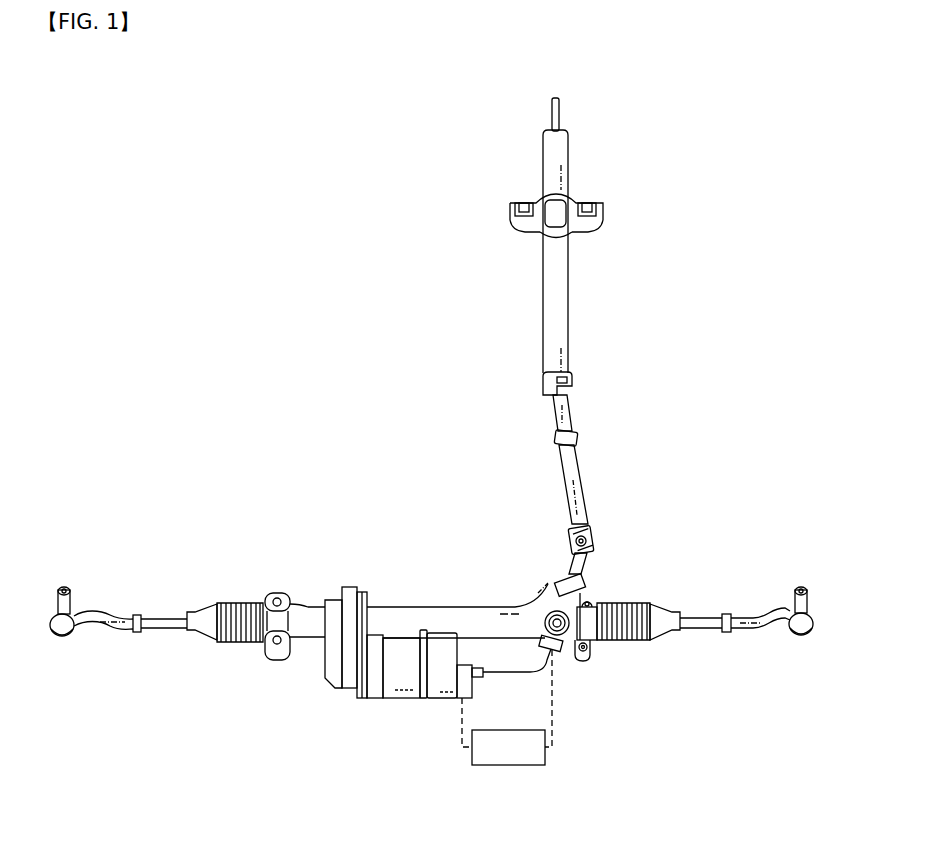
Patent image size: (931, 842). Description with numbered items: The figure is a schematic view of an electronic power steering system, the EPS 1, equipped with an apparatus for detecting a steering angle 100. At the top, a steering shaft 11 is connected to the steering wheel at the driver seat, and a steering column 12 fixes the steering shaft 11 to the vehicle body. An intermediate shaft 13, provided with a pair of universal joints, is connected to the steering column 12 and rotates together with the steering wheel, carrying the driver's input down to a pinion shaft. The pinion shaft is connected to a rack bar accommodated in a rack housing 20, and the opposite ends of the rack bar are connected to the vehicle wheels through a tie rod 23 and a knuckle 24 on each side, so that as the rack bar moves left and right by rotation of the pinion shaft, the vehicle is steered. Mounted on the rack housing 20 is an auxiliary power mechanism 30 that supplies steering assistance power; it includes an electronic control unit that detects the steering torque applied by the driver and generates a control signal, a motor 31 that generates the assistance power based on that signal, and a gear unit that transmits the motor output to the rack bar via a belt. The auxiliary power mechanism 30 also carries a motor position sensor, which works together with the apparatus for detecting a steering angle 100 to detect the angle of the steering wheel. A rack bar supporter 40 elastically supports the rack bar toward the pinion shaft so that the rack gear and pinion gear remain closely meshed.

The EPS 1 is at (224, 182).
The steering shaft 11 is at (563, 148).
The steering column 12 is at (593, 222).
The intermediate shaft 13 is at (575, 477).
The rack housing 20 is at (430, 613).
The tie rod 23 is at (740, 627).
The knuckle 24 is at (807, 600).
The auxiliary power mechanism 30 is at (404, 676).
The motor 31 is at (410, 682).
The rack bar supporter 40 is at (563, 638).
The apparatus for detecting a steering angle 100 is at (598, 587).